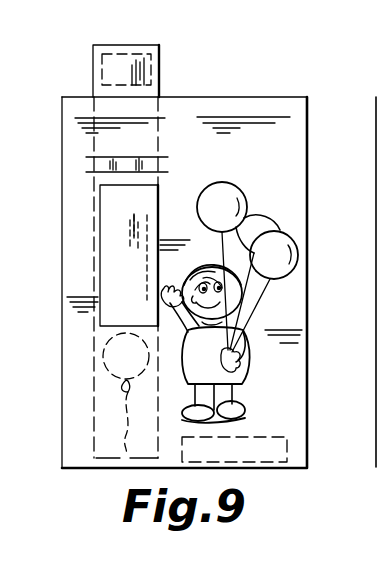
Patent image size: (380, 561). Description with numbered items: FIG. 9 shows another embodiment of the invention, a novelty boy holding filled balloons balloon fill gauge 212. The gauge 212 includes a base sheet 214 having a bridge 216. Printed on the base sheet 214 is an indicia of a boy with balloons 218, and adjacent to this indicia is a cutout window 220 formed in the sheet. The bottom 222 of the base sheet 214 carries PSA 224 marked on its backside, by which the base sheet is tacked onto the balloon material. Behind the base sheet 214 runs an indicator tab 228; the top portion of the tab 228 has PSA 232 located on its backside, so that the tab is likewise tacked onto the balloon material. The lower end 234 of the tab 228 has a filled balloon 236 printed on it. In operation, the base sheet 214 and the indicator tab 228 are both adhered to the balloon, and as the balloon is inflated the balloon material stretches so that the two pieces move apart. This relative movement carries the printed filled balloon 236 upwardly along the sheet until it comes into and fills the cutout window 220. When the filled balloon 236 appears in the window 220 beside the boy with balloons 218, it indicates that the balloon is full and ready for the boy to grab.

The novelty boy holding filled balloons balloon fill gauge 212 is at (243, 85).
The base sheet 214 is at (270, 97).
The bridge 216 is at (160, 168).
The indicia of a boy with balloons 218 is at (252, 350).
The cutout window 220 is at (105, 240).
The bottom 222 is at (308, 452).
The PSA 224 is at (248, 455).
The indicator tab 228 is at (126, 45).
The PSA 232 is at (102, 70).
The lower end 234 is at (110, 408).
The filled balloon 236 is at (104, 361).